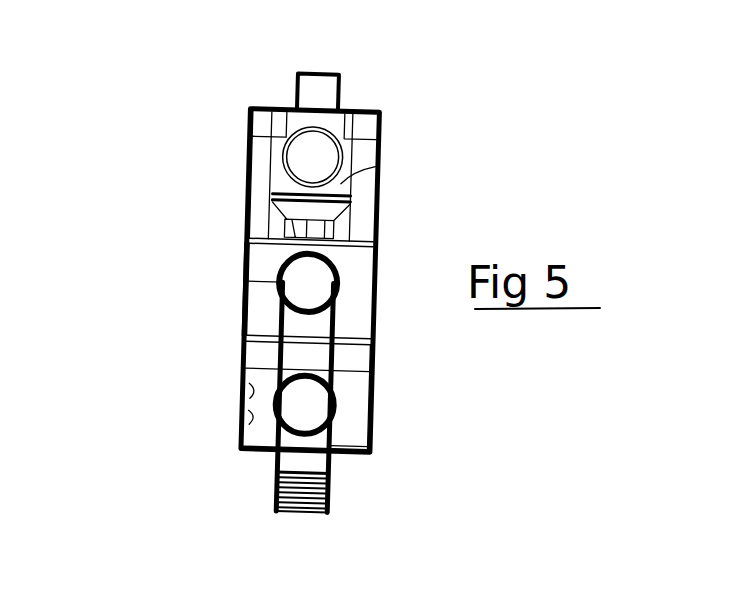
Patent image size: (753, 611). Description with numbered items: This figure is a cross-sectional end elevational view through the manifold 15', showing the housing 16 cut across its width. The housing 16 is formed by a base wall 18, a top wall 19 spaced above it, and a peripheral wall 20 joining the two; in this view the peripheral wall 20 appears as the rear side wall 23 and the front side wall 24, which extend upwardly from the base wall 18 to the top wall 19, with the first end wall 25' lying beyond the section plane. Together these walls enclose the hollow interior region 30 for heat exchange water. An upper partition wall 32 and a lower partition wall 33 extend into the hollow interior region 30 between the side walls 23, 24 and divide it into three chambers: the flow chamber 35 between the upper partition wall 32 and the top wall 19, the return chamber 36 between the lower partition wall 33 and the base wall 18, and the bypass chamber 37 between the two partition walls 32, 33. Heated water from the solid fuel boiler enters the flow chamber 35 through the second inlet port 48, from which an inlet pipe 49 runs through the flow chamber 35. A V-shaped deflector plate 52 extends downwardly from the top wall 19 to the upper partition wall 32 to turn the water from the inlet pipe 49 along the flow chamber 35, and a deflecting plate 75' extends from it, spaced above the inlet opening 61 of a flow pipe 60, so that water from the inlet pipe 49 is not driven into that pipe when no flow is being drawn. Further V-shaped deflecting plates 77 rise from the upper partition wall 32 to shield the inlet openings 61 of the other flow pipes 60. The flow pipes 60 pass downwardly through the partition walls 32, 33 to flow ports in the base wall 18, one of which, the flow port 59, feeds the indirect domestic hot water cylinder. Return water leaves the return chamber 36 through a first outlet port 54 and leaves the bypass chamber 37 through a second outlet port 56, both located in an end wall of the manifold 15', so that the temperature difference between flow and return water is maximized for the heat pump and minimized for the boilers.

The manifold 15' is at (384, 253).
The top wall 19 is at (367, 112).
The second inlet port 48 is at (345, 160).
The inlet pipe 49 is at (285, 152).
The V-shaped deflector plate 52 is at (283, 178).
The flow chamber 35 is at (258, 188).
The inlet openings 61 is at (272, 203).
The V-shaped deflecting plates 77 is at (337, 222).
The first end wall 25' is at (414, 177).
The deflecting plate 75' is at (437, 161).
The second outlet port 56 is at (340, 282).
The flow pipes 60 is at (338, 318).
The lower partition wall 33 is at (253, 357).
The hollow interior region 30 is at (250, 430).
The first outlet port 54 is at (260, 457).
The flow port 59 is at (287, 512).
The base wall 18 is at (347, 457).
The housing 16 is at (358, 457).
The peripheral wall 20 is at (372, 360).
The rear side wall 23 is at (372, 397).
The upper partition wall 32 is at (258, 262).
The bypass chamber 37 is at (243, 273).
The front side wall 24 is at (262, 285).
The return chamber 36 is at (248, 400).